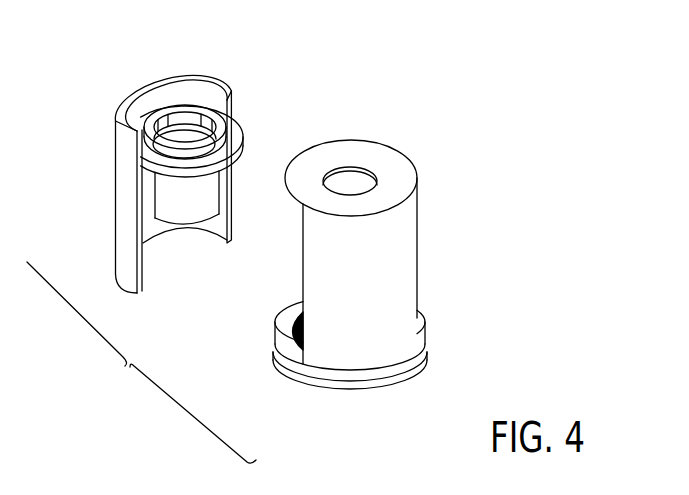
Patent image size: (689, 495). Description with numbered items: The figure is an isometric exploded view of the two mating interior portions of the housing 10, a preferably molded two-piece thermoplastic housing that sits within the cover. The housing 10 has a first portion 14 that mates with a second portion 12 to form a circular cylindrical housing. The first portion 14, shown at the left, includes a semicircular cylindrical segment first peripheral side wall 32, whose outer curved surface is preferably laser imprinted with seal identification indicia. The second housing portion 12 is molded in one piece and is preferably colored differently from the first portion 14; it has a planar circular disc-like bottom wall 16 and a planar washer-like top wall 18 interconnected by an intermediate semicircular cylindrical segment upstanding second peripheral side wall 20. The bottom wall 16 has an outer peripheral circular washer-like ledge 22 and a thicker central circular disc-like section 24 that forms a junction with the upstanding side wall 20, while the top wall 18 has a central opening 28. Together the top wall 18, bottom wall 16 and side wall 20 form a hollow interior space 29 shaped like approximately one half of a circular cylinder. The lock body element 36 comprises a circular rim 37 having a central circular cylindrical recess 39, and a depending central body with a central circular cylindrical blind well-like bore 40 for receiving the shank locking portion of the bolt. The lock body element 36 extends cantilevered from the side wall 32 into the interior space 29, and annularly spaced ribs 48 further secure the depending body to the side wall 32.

The housing 10 is at (141, 362).
The second housing portion 12 is at (286, 208).
The first housing portion 14 is at (175, 160).
The bottom wall 16 is at (424, 345).
The top wall 18 is at (403, 172).
The second peripheral side wall 20 is at (410, 246).
The ledge 22 is at (292, 318).
The central disc-like section 24 is at (297, 333).
The central opening 28 is at (348, 178).
The hollow interior space 29 is at (150, 228).
The first peripheral side wall 32 is at (120, 189).
The lock body element 36 is at (192, 234).
The circular rim 37 is at (238, 153).
The central circular cylindrical recess 39 is at (228, 138).
The blind well-like bore 40 is at (183, 150).
The ribs 48 is at (148, 205).